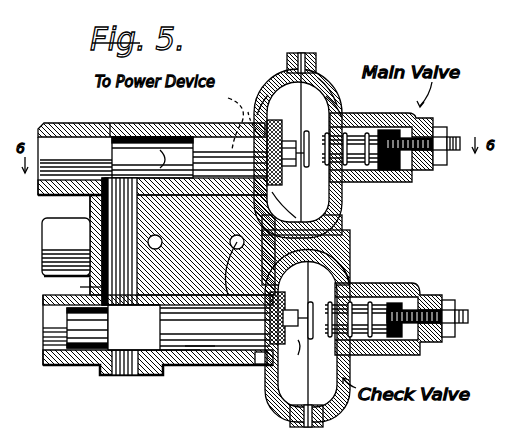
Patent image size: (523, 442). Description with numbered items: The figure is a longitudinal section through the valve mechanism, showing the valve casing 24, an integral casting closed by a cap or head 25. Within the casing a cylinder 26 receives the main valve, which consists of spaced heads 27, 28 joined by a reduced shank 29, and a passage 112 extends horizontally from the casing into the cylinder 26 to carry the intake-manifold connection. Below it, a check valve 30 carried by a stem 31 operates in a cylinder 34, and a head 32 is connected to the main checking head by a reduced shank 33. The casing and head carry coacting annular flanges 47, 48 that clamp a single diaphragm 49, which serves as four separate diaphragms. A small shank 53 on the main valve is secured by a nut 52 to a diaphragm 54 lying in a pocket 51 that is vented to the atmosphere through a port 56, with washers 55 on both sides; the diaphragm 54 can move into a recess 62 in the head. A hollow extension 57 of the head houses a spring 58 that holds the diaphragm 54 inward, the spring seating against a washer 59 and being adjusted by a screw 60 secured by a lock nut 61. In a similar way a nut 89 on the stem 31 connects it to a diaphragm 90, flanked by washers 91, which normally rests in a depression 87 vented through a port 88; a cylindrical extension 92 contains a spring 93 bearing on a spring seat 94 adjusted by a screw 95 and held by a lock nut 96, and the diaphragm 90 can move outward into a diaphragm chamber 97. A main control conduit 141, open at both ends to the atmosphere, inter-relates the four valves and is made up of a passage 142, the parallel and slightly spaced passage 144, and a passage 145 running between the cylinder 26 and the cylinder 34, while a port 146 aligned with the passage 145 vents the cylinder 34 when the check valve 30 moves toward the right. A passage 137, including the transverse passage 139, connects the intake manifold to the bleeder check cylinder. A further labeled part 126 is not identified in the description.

The main valve head 27 is at (70, 138).
The cylinder 26 is at (133, 130).
The passage 112 is at (180, 128).
The reduced shank 29 is at (76, 160).
The main valve head 28 is at (205, 135).
The passage 126 is at (224, 117).
The small shank 53 is at (268, 136).
The passage 142 is at (148, 245).
The main control conduit 141 is at (112, 216).
The passage 144 is at (105, 242).
The passage 145 is at (79, 285).
The valve casing 24 is at (70, 372).
The head 32 is at (48, 327).
The reduced shank 33 is at (92, 355).
The port 146 is at (124, 378).
The transverse passage 139 is at (189, 327).
The check valve 30 is at (176, 364).
The stem 31 is at (198, 362).
The cylinder 34 is at (222, 368).
The port 88 is at (258, 368).
The cap or head 25 is at (342, 186).
The depression 87 is at (272, 388).
The diaphragm chamber 97 is at (330, 252).
The annular flange 47 is at (289, 55).
The annular flange 48 is at (312, 56).
The diaphragm 49 is at (301, 53).
The pocket or depression 51 is at (270, 94).
The port 56 is at (248, 110).
The diaphragm 54 is at (318, 78).
The recess 62 is at (326, 96).
The washers 55 is at (282, 126).
The nut 52 is at (300, 170).
The passage 137 is at (287, 205).
The hollow extension 57 is at (405, 115).
The spring 58 is at (363, 130).
The washer 59 is at (392, 183).
The lock nut 61 is at (440, 166).
The screw 60 is at (453, 151).
The cylindrical extension 92 is at (374, 288).
The spring 93 is at (378, 342).
The spring seat 94 is at (410, 343).
The lock nut 96 is at (448, 338).
The screw 95 is at (462, 324).
The diaphragm 90 is at (287, 283).
The washers 91 is at (288, 294).
The nut 89 is at (302, 345).